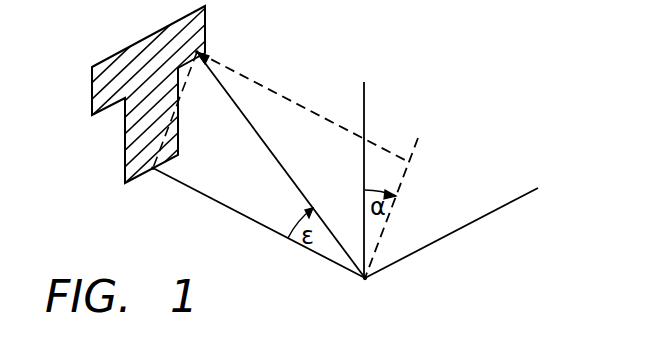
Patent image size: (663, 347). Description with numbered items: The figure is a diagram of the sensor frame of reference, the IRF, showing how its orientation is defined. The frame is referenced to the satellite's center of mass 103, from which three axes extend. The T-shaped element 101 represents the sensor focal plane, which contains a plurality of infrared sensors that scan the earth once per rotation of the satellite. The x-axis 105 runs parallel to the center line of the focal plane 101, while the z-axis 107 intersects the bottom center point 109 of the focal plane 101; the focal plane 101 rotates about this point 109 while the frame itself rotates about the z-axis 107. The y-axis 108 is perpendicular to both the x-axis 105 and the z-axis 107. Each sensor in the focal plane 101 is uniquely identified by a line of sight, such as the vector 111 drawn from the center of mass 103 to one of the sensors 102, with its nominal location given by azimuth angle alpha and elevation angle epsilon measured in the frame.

The T-shaped element 101 is at (90, 96).
The sensor 102 is at (203, 50).
The satellite's center of mass 103 is at (364, 281).
The x-axis 105 is at (365, 122).
The z-axis 107 is at (253, 218).
The y-axis 108 is at (458, 230).
The bottom center point 109 is at (152, 170).
The line-of-sight vector 111 is at (287, 171).